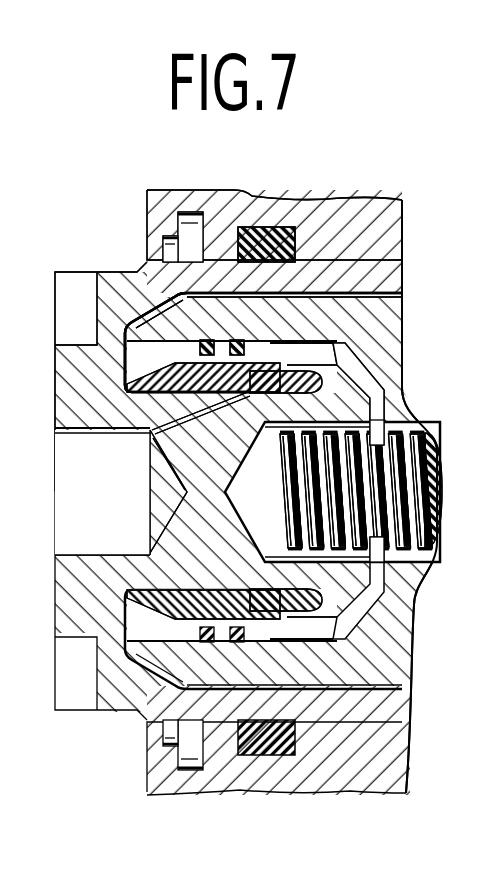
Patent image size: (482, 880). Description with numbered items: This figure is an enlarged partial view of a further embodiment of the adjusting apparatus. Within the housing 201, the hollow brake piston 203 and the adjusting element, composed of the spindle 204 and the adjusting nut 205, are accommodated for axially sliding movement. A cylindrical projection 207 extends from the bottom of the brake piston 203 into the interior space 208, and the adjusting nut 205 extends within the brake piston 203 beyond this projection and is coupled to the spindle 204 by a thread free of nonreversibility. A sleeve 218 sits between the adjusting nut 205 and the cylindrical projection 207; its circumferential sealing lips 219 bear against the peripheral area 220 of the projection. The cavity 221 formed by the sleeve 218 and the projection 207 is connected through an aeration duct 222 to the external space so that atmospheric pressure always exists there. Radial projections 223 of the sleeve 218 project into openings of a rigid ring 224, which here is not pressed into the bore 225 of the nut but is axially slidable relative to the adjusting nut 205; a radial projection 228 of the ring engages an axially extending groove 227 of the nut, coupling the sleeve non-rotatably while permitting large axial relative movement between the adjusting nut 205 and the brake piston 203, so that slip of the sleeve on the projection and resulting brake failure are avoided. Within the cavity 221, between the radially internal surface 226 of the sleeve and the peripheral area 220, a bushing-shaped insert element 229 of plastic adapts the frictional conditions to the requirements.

The housing 201 is at (383, 217).
The brake piston 203 is at (377, 280).
The spindle 204 is at (397, 492).
The adjusting nut 205 is at (383, 331).
The cylindrical projection 207 is at (373, 590).
The interior space 208 is at (373, 635).
The sleeve 218 is at (153, 364).
The sealing lips 219 is at (145, 376).
The peripheral area 220 is at (140, 437).
The cavity 221 is at (157, 410).
The aeration duct 222 is at (175, 450).
The radial projections 223 is at (227, 262).
The rigid ring 224 is at (297, 258).
The bore 225 is at (110, 345).
The radially internal surface 226 is at (300, 350).
The axially extending groove 227 is at (137, 320).
The radial projection 228 is at (157, 345).
The bushing-shaped insert element 229 is at (380, 412).